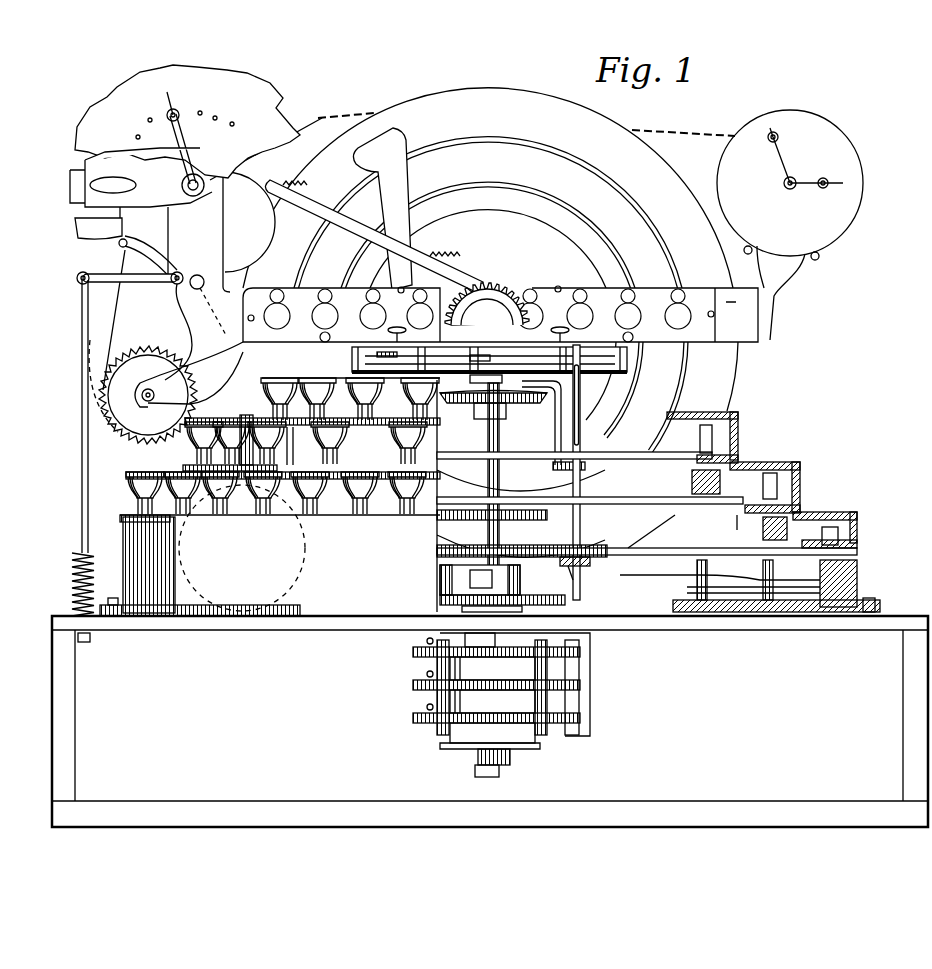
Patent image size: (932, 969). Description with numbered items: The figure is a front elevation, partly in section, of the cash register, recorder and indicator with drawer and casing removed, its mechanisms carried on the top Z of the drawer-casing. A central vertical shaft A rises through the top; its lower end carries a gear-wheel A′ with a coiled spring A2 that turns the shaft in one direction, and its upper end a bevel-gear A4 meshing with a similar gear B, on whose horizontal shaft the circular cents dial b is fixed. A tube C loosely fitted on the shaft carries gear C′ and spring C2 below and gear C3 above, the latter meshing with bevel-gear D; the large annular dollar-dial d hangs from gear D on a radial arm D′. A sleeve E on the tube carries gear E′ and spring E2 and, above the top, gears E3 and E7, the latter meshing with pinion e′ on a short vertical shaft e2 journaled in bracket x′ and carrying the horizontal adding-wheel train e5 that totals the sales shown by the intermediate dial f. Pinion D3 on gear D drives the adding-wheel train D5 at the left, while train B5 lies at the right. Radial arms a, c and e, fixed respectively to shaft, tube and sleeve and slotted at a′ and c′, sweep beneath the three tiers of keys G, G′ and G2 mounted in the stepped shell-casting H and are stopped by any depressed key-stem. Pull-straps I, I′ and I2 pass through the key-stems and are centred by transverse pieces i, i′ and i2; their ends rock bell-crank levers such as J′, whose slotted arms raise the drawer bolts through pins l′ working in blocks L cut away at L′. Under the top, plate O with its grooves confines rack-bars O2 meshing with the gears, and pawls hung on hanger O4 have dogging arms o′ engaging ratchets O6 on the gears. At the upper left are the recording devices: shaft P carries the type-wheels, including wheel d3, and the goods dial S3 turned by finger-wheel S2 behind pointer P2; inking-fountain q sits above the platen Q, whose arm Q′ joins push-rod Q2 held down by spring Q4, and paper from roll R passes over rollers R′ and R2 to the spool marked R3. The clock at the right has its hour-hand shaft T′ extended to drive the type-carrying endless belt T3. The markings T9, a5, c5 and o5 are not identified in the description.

The annular dial d is at (369, 277).
The arm D′ is at (408, 234).
The indicating arm a5 is at (430, 262).
The type-wheel d3 is at (266, 205).
The endless belt T3 is at (345, 116).
The time indicator bar T9 is at (695, 130).
The hour-hand shaft T′ is at (790, 225).
The adding-wheels D5 is at (500, 314).
The adding-wheels B5 is at (604, 324).
The key stem disk c5 is at (409, 334).
The adding-wheels e5 is at (554, 334).
The bevel-gear B is at (487, 304).
The bevel-gear D is at (470, 284).
The pinion D3 is at (508, 292).
The paper-roll R is at (305, 549).
The circular dial b is at (521, 430).
The pointer P2 is at (187, 128).
The shaft P is at (193, 198).
The dial S3 is at (141, 177).
The finger-wheel S2 is at (200, 176).
The inking-fountain q is at (90, 240).
The platen Q is at (130, 258).
The roller R2 is at (95, 253).
The arm Q′ is at (118, 280).
The roller R′ is at (198, 275).
The push-rod Q2 is at (89, 455).
The spring Q4 is at (72, 580).
The crank arm R3 is at (130, 446).
The pull-strap I′ is at (98, 385).
The pull-strap I is at (105, 420).
The shell-casting H is at (123, 537).
The keys G is at (278, 378).
The annular dial f is at (317, 383).
The keys G′ is at (386, 436).
The keys G2 is at (388, 486).
The bevel-gear A4 is at (489, 375).
The gear C3 is at (473, 409).
The tube C is at (500, 477).
The radial arm a is at (556, 406).
The loop or slot a′ is at (558, 471).
The vertical shaft e2 is at (587, 472).
The transverse piece i is at (574, 448).
The transverse piece i′ is at (590, 492).
The loop or slot c′ is at (562, 520).
The arm e is at (647, 557).
The gear E7 is at (522, 560).
The pinion e′ is at (558, 561).
The bracket x′ is at (579, 580).
The sleeve E is at (480, 580).
The gear E3 is at (438, 600).
The blocks L is at (722, 485).
The pull-strap I2 is at (714, 437).
The cut-away L′ is at (720, 462).
The bell-crank lever J′ is at (760, 580).
The pins l′ is at (822, 572).
The arm c is at (730, 522).
The transverse piece i2 is at (698, 540).
The top Z is at (204, 626).
The gear-wheel A′ is at (412, 719).
The gear E′ is at (412, 652).
The gear C′ is at (412, 686).
The spring E2 is at (492, 668).
The spring C2 is at (492, 701).
The spring A2 is at (490, 736).
The central vertical shaft A is at (500, 772).
The plate O is at (578, 652).
The rack-bars O2 is at (578, 695).
The ratchet O6 is at (420, 671).
The hanger O4 is at (536, 671).
The dogging arm o′ is at (518, 712).
The stud o5 is at (558, 680).